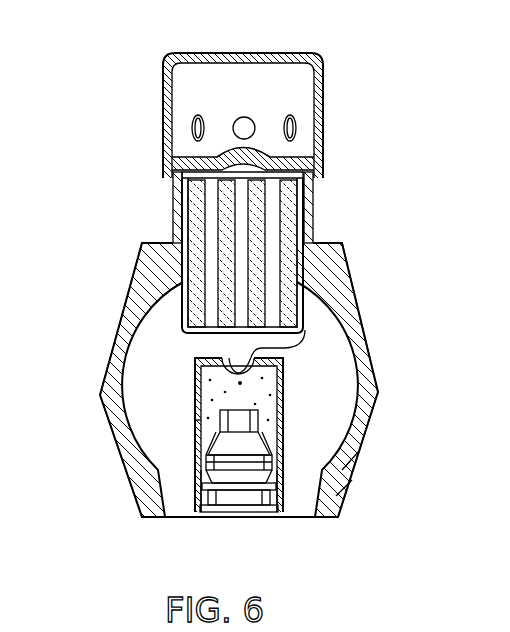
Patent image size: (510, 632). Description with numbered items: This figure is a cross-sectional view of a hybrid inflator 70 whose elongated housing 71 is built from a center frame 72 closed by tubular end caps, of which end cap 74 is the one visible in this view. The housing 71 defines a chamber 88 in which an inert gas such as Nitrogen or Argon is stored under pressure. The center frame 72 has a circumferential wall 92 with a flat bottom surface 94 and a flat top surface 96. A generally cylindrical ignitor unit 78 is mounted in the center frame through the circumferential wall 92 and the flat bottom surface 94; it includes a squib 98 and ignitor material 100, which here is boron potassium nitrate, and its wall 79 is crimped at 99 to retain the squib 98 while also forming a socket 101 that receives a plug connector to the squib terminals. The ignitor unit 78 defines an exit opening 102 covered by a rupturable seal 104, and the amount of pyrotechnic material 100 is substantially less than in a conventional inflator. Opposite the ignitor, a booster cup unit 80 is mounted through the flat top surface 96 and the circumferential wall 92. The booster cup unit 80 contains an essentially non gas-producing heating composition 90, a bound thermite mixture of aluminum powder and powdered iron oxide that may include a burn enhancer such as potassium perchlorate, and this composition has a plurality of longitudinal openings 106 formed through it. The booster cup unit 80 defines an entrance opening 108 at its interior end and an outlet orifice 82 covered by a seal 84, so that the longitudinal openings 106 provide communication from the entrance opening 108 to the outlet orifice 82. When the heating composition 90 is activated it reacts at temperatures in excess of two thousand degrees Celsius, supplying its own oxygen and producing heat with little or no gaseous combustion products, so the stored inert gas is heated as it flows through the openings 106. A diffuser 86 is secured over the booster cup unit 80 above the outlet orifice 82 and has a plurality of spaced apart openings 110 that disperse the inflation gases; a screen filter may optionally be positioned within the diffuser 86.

The inflator 70 is at (125, 185).
The elongated housing 71 is at (332, 400).
The center frame 72 is at (107, 425).
The tubular end cap 74 is at (336, 381).
The ignitor unit 78 is at (192, 426).
The wall of ignitor unit 79 is at (352, 458).
The booster cup unit 80 is at (172, 312).
The outlet orifice 82 is at (177, 147).
The seal 84 is at (318, 153).
The diffuser 86 is at (326, 90).
The chamber 88 is at (165, 404).
The heating composition 90 is at (168, 266).
The circumferential wall 92 is at (350, 432).
The flat bottom surface 94 is at (305, 518).
The flat top surface 96 is at (330, 243).
The squib 98 is at (198, 503).
The crimp 99 is at (348, 487).
The ignitor material 100 is at (266, 409).
The socket 101 is at (232, 518).
The exit opening 102 is at (298, 352).
The rupturable seal 104 is at (225, 362).
The longitudinal openings 106 is at (204, 201).
The entrance opening 108 is at (305, 343).
The spaced apart openings 110 is at (200, 116).